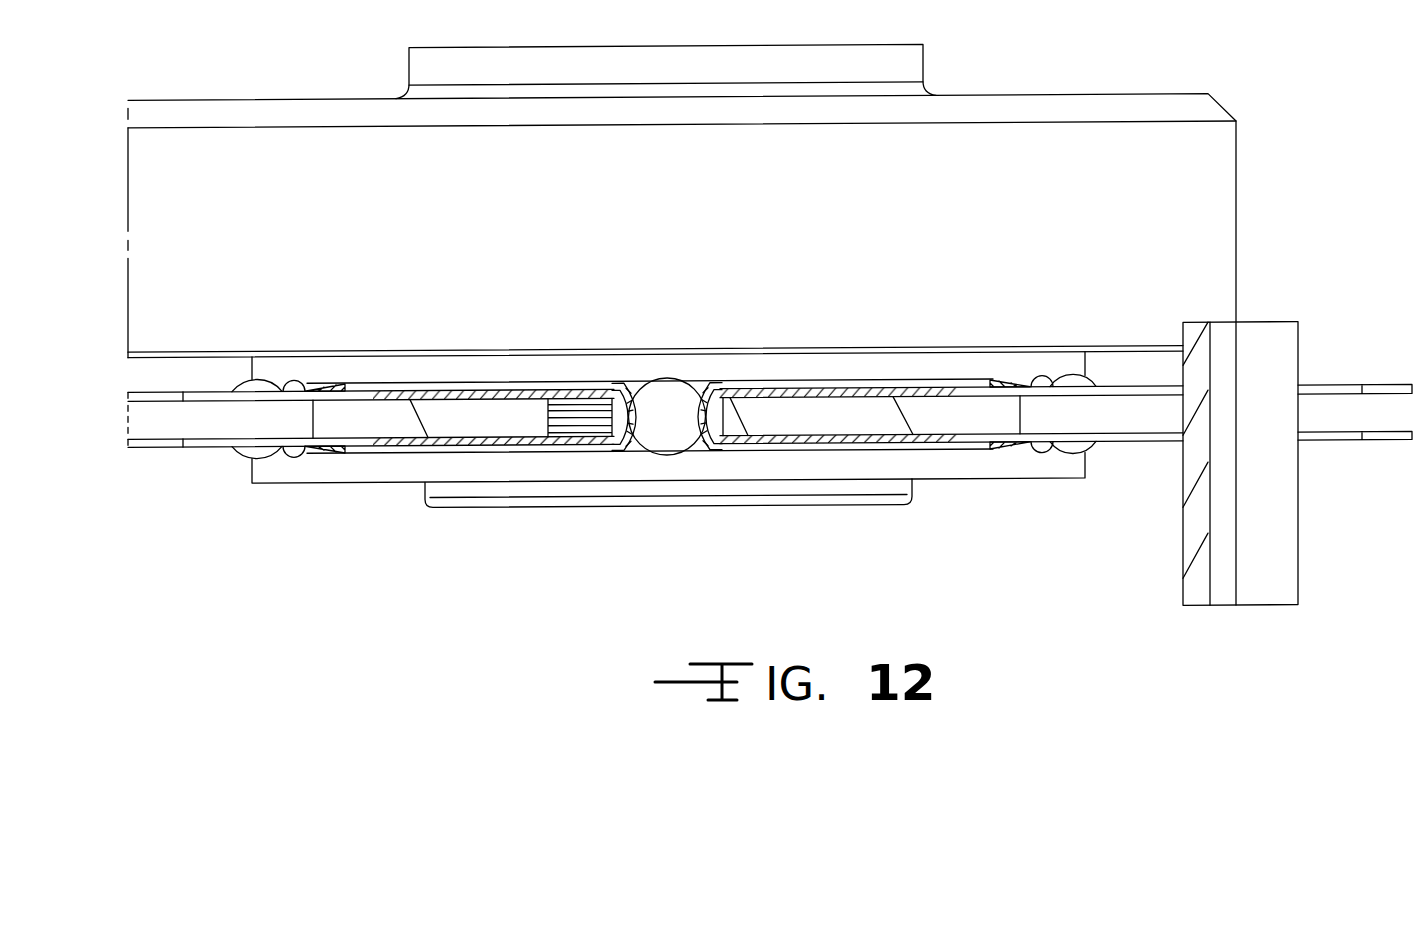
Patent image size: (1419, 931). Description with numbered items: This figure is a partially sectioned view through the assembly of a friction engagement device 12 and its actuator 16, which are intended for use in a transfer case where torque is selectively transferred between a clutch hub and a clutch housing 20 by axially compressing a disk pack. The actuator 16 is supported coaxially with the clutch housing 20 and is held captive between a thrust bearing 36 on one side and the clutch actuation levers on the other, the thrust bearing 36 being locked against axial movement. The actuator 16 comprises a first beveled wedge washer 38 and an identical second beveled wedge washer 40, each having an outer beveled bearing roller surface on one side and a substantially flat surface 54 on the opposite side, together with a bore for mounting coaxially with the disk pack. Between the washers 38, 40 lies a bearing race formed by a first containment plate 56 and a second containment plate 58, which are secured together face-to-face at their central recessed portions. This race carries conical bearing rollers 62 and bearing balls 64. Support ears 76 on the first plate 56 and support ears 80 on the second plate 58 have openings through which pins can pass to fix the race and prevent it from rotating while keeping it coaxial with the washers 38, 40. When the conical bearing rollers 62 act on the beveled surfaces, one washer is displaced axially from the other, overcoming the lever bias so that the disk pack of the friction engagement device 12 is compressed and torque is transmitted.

The friction engagement device 12 is at (1153, 90).
The actuator 16 is at (1063, 492).
The clutch housing 20 is at (1238, 190).
The thrust bearing 36 is at (904, 505).
The first beveled wedge washer 38 is at (987, 482).
The second beveled wedge washer 40 is at (1090, 369).
The flat surfaces 54 is at (950, 347).
The first bearing ball and conical bearing roller containment plate 56 is at (158, 447).
The second bearing ball and conical bearing roller containment plate 58 is at (140, 385).
The conical bearing rollers 62 is at (290, 460).
The bearing balls 64 is at (672, 432).
The support ears 76 is at (1375, 444).
The support ears 80 is at (1378, 389).